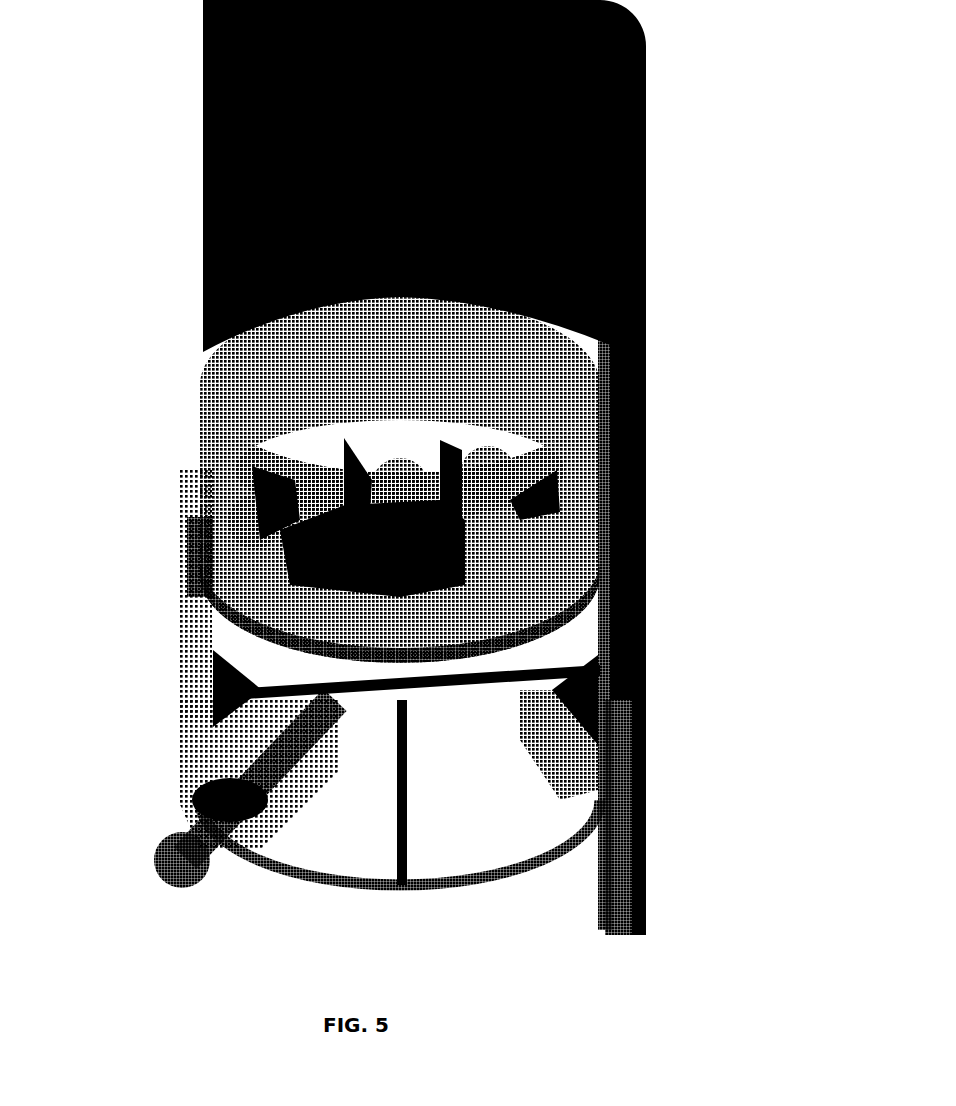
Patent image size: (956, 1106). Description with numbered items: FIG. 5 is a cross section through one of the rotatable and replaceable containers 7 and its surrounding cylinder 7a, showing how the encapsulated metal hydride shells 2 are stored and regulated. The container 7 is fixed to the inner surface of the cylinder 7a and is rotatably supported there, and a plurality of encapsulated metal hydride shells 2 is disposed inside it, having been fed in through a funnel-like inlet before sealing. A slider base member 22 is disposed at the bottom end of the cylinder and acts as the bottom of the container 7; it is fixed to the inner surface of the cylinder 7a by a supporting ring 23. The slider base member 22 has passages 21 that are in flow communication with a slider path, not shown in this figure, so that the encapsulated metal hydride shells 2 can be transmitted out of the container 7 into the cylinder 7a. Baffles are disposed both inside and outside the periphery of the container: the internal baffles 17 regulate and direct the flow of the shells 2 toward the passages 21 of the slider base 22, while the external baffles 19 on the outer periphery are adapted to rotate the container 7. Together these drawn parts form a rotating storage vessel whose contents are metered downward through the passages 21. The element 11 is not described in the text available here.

The cylinder 7a is at (648, 139).
The container 7 is at (503, 413).
The encapsulated metal hydride shell 2 is at (520, 465).
The internal baffle 17 is at (345, 460).
The passage 21 is at (513, 545).
The external baffle 19 is at (645, 675).
The slider base member 22 is at (405, 820).
The supporting ring 23 is at (355, 885).
The pipe 11 is at (190, 878).